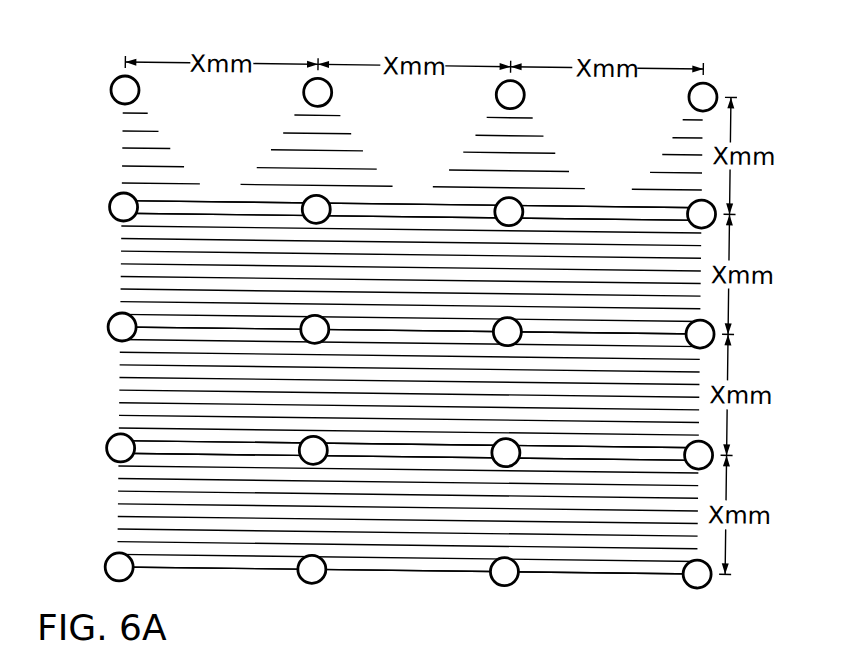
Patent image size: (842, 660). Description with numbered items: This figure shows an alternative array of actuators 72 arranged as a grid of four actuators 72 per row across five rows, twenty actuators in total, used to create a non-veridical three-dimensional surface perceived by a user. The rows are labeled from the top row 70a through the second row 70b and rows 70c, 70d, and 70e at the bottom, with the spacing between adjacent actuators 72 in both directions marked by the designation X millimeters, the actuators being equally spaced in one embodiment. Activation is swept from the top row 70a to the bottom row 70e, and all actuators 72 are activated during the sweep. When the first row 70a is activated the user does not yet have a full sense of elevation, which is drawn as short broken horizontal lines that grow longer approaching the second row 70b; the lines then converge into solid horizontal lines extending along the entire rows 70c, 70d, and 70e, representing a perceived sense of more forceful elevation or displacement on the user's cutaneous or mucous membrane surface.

The first row 70a is at (108, 70).
The second row 70b is at (108, 186).
The third row 70c is at (108, 307).
The fourth row 70d is at (108, 428).
The bottom row 70e is at (108, 547).
The actuators 72 is at (139, 88).